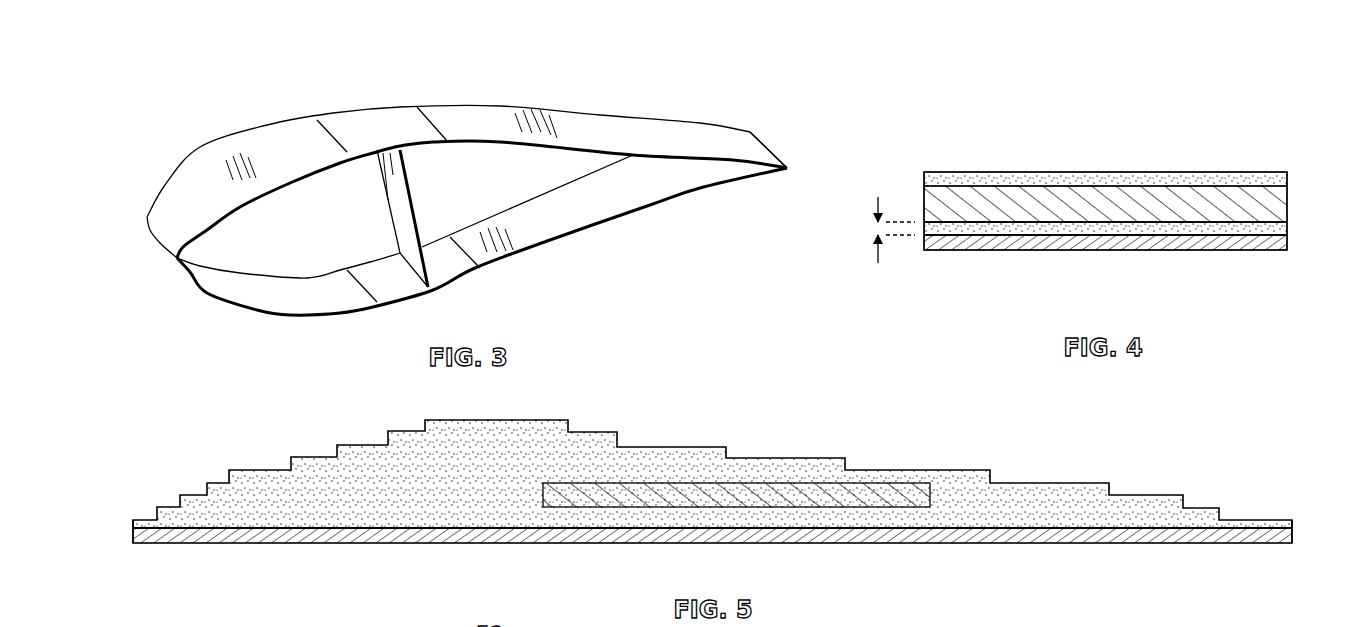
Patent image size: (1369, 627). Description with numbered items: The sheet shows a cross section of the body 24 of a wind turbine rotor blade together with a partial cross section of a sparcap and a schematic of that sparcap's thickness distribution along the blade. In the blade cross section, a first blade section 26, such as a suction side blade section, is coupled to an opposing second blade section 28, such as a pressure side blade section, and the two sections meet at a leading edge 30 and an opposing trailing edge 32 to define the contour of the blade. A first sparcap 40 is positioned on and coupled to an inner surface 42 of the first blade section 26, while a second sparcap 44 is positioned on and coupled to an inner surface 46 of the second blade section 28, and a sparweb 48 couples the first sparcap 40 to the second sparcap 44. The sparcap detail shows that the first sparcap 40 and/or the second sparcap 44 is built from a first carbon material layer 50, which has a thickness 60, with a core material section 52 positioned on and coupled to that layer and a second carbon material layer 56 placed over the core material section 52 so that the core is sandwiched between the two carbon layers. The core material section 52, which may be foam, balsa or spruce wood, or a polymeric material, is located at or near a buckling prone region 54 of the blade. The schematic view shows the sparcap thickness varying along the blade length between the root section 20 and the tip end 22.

In FIG. 5, the root section 20 is at (131, 535).
In FIG. 5, the tip end 22 is at (1294, 535).
In FIG. 3, the body 24 is at (464, 209).
In FIG. 3, the first blade section 26 is at (498, 118).
In FIG. 4, the first blade section 26 is at (1105, 269).
In FIG. 5, the first blade section 26 is at (712, 561).
In FIG. 3, the second blade section 28 is at (540, 237).
In FIG. 4, the second blade section 28 is at (1150, 243).
In FIG. 5, the second blade section 28 is at (1113, 535).
In FIG. 3, the leading edge 30 is at (153, 235).
In FIG. 3, the trailing edge 32 is at (775, 150).
In FIG. 3, the first sparcap 40 is at (340, 122).
In FIG. 4, the first sparcap 40 is at (1079, 203).
In FIG. 5, the first sparcap 40 is at (710, 494).
In FIG. 3, the inner surface 42 is at (263, 188).
In FIG. 3, the second sparcap 44 is at (443, 278).
In FIG. 4, the second sparcap 44 is at (1079, 203).
In FIG. 5, the second sparcap 44 is at (710, 494).
In FIG. 3, the inner surface 46 is at (333, 303).
In FIG. 3, the sparweb 48 is at (397, 208).
In FIG. 4, the first carbon material layer 50 is at (1280, 228).
In FIG. 5, the first carbon material layer 50 is at (962, 520).
In FIG. 4, the core material section 52 is at (1282, 193).
In FIG. 5, the core material section 52 is at (893, 497).
In FIG. 5, the buckling prone region 54 is at (765, 555).
In FIG. 4, the second carbon material layer 56 is at (1225, 175).
In FIG. 5, the second carbon material layer 56 is at (657, 455).
In FIG. 4, the thickness 60 is at (877, 250).